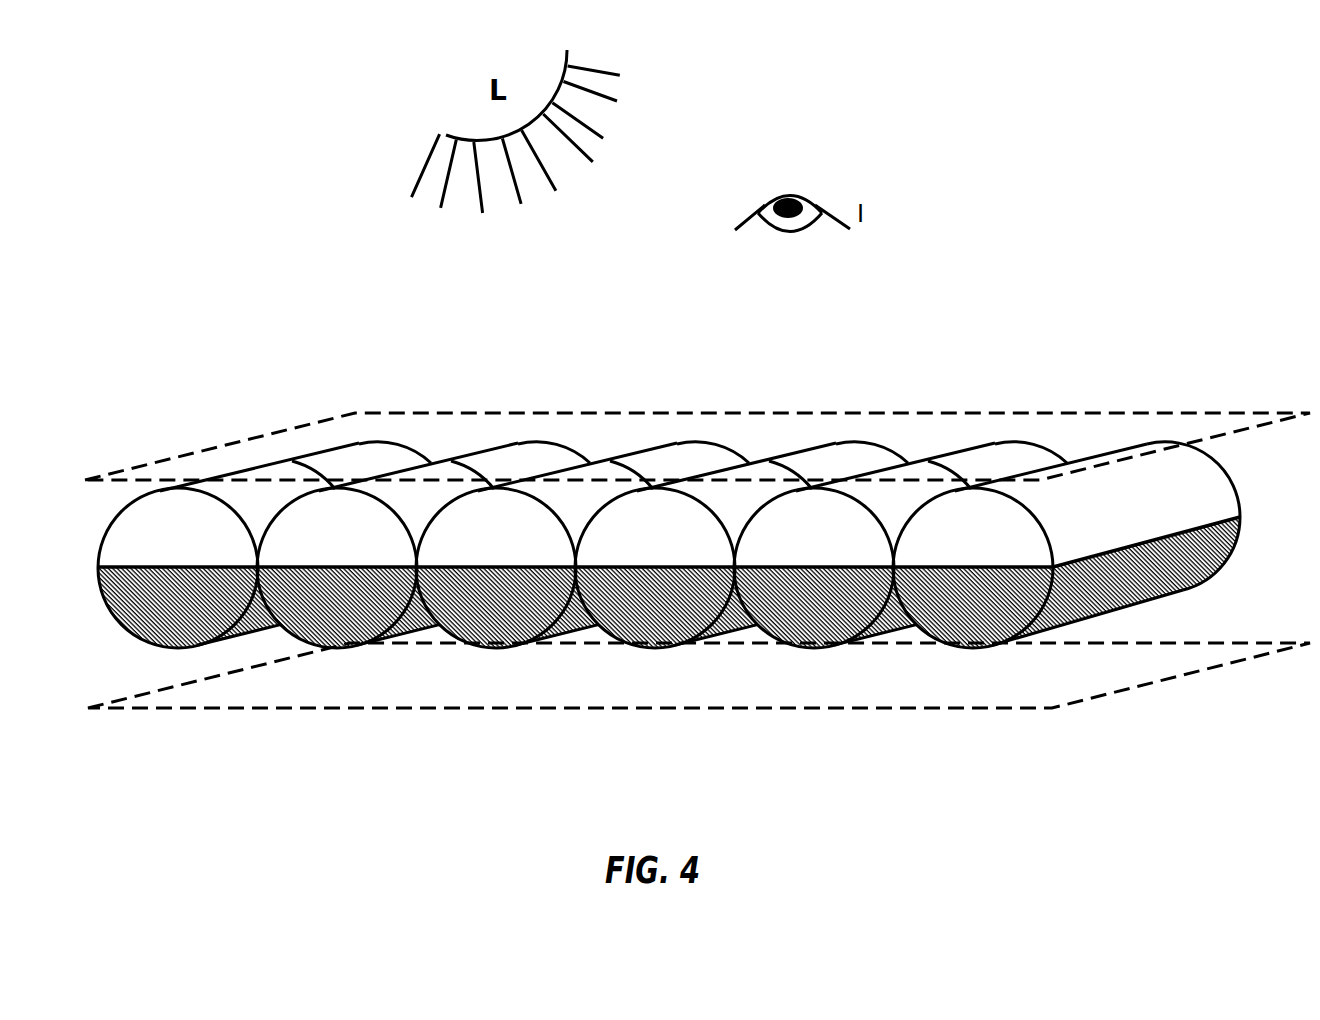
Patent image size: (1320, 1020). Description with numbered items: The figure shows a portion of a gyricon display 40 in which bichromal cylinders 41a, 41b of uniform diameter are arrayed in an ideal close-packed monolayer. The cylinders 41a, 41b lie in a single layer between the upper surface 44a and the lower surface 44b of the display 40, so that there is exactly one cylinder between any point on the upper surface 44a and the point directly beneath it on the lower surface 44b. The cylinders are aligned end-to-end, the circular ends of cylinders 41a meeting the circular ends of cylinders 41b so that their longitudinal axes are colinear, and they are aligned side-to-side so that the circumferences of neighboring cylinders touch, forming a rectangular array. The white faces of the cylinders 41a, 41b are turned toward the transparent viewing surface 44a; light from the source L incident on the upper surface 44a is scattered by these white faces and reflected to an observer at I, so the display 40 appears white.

The gyricon display 40 is at (398, 360).
The bichromal cylinders 41a is at (503, 627).
The bichromal cylinders 41b is at (537, 452).
The upper surface 44a is at (1093, 416).
The lower surface 44b is at (1113, 696).